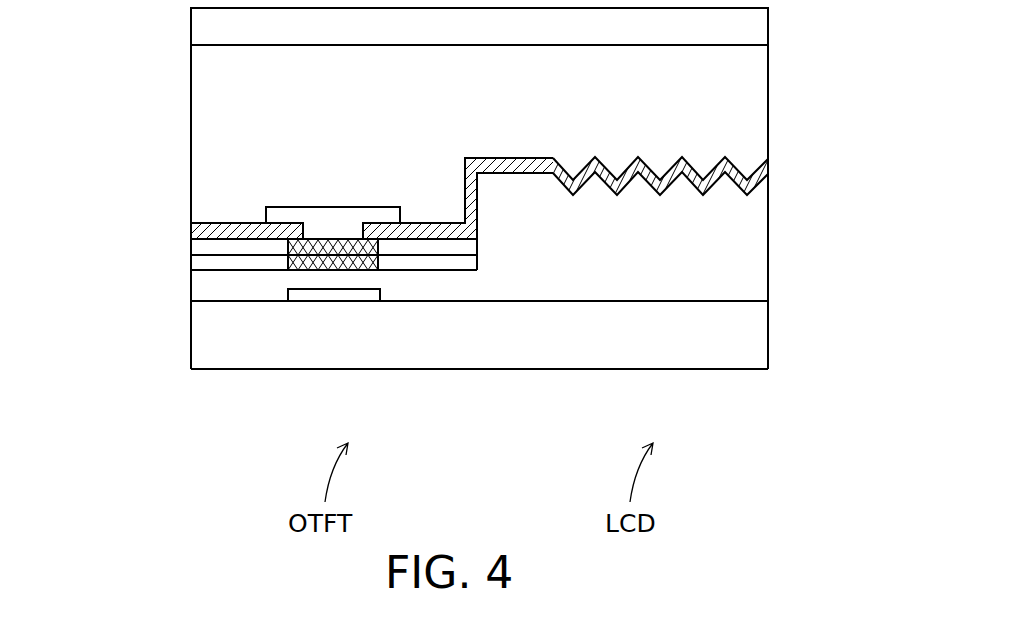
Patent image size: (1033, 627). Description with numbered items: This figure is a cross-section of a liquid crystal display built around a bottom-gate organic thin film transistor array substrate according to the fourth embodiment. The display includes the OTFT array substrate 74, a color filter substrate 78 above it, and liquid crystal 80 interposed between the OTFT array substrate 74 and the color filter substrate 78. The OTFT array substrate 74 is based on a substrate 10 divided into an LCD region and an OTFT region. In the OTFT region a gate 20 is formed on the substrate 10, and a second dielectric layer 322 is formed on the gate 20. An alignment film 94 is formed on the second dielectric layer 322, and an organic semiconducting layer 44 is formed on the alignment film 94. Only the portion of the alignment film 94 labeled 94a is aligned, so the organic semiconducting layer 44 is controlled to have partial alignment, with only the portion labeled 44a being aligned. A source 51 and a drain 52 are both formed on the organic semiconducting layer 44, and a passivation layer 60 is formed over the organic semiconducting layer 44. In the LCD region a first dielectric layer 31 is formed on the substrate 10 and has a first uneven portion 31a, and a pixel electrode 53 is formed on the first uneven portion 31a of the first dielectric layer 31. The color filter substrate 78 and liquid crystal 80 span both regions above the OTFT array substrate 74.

The substrate 10 is at (757, 333).
The gate 20 is at (293, 301).
The second dielectric layer 322 is at (200, 288).
The alignment film 94 is at (200, 266).
The aligned portion of alignment film 94a is at (322, 272).
The organic semiconducting layer 44 is at (202, 248).
The aligned portion of organic semiconducting layer 44a is at (370, 272).
The source 51 is at (200, 230).
The drain 52 is at (438, 238).
The pixel electrode 53 is at (617, 188).
The passivation layer 60 is at (280, 214).
The OTFT array substrate 74 is at (82, 165).
The first dielectric layer 31 is at (757, 242).
The first uneven portion 31a is at (656, 166).
The color filter substrate 78 is at (757, 30).
The liquid crystal 80 is at (757, 65).